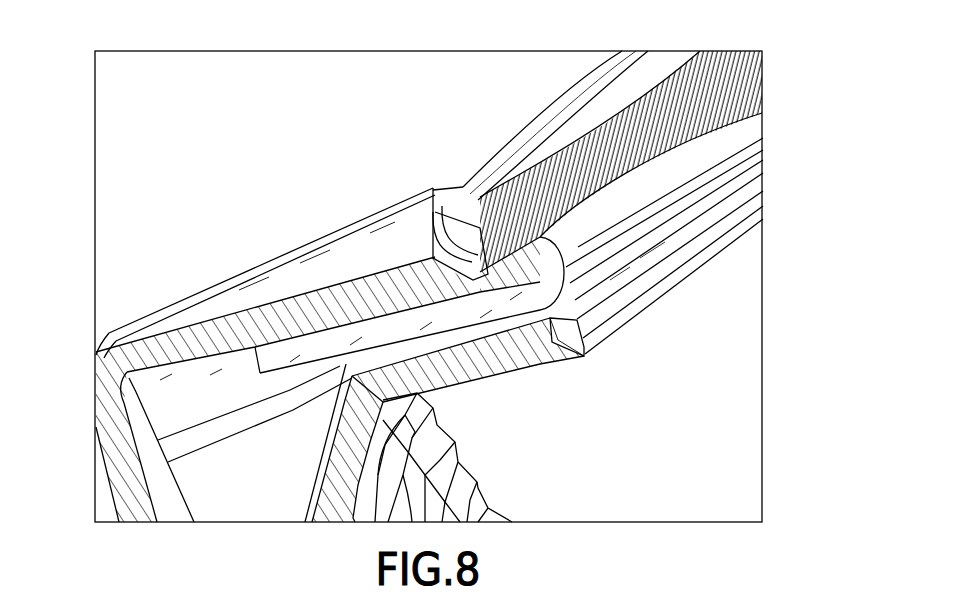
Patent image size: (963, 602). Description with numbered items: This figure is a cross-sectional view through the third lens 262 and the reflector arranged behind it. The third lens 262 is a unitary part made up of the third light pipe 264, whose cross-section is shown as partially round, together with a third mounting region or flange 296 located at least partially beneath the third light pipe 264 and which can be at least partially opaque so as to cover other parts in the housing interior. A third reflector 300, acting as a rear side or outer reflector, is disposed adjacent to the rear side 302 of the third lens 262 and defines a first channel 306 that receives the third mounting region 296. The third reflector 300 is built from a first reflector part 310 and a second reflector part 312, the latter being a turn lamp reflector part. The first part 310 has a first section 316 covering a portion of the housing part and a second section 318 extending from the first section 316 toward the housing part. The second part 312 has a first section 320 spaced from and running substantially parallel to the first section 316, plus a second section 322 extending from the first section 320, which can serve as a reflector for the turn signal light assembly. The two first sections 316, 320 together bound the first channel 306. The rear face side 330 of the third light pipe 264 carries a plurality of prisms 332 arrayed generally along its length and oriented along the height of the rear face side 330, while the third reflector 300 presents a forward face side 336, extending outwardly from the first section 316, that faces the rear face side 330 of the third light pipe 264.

The third lens 262 is at (338, 318).
The third light pipe 264 is at (745, 132).
The third mounting region or flange 296 is at (330, 357).
The third reflector 300 is at (358, 240).
The rear side of the third lens 302 is at (410, 300).
The first channel 306 is at (442, 343).
The first reflector part 310 is at (246, 262).
The second reflector part 312 is at (555, 372).
The first section of the first reflector part 316 is at (240, 303).
The second section of the first reflector part 318 is at (118, 478).
The first section of the second reflector part 320 is at (520, 364).
The second section of the second reflector part 322 is at (327, 482).
The rear face side of the third light pipe 330 is at (470, 253).
The prisms 332 is at (647, 88).
The forward face side of the third reflector 336 is at (462, 228).